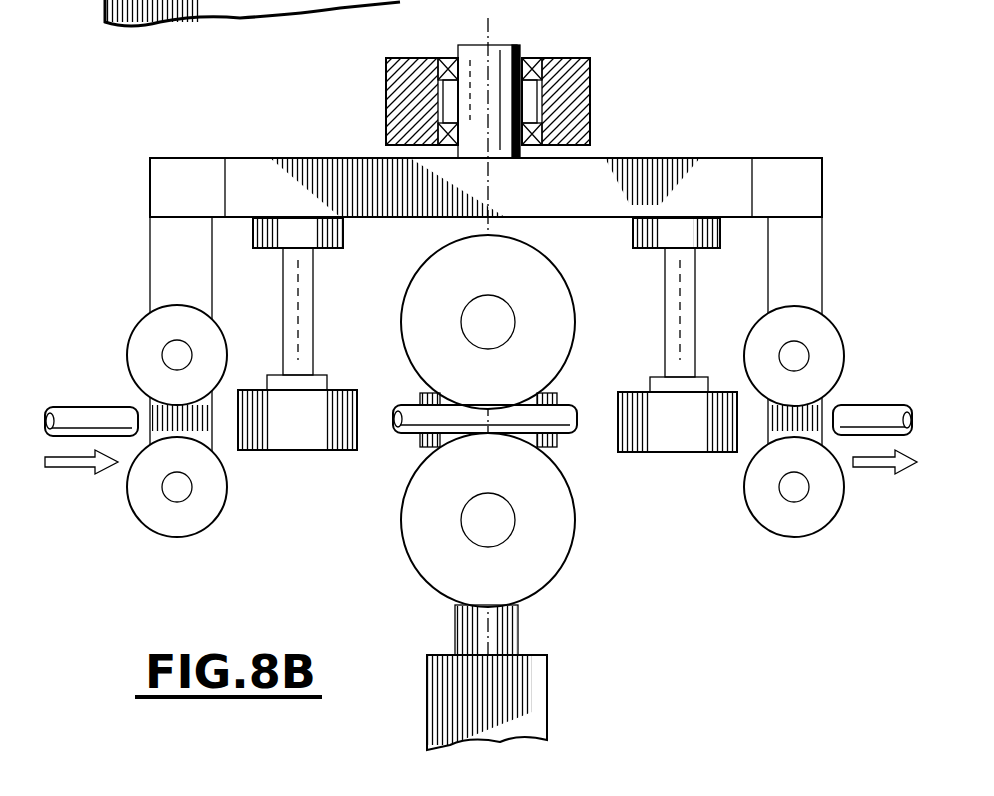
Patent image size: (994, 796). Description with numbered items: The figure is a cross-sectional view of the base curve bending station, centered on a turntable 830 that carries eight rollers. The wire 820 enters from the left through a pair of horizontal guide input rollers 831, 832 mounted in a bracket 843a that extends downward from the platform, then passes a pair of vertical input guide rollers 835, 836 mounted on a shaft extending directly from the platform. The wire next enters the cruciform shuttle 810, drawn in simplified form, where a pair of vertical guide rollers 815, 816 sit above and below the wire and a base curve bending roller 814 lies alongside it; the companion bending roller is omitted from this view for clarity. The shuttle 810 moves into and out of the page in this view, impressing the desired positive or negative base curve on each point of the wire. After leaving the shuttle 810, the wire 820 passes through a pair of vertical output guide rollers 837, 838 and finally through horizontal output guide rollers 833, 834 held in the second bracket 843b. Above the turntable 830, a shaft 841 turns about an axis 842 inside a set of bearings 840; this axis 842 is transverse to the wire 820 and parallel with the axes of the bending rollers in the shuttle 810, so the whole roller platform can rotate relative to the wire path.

The shuttle 810 is at (547, 705).
The base curve bending roller 814 is at (420, 447).
The vertical guide roller 815 is at (565, 278).
The vertical guide roller 816 is at (570, 542).
The wire 820 is at (87, 405).
The turntable 830 is at (483, 187).
The horizontal guide input roller 831 is at (137, 323).
The horizontal guide input roller 832 is at (150, 528).
The horizontal output guide roller 833 is at (832, 338).
The horizontal output guide roller 834 is at (783, 533).
The vertical input guide roller 835 is at (302, 452).
The vertical input guide roller 836 is at (297, 382).
The vertical output guide roller 837 is at (665, 452).
The vertical output guide roller 838 is at (668, 362).
The bearings 840 is at (590, 95).
The shaft 841 is at (513, 43).
The axis 842 is at (487, 32).
The bracket 843a is at (165, 185).
The bracket 843b is at (822, 205).